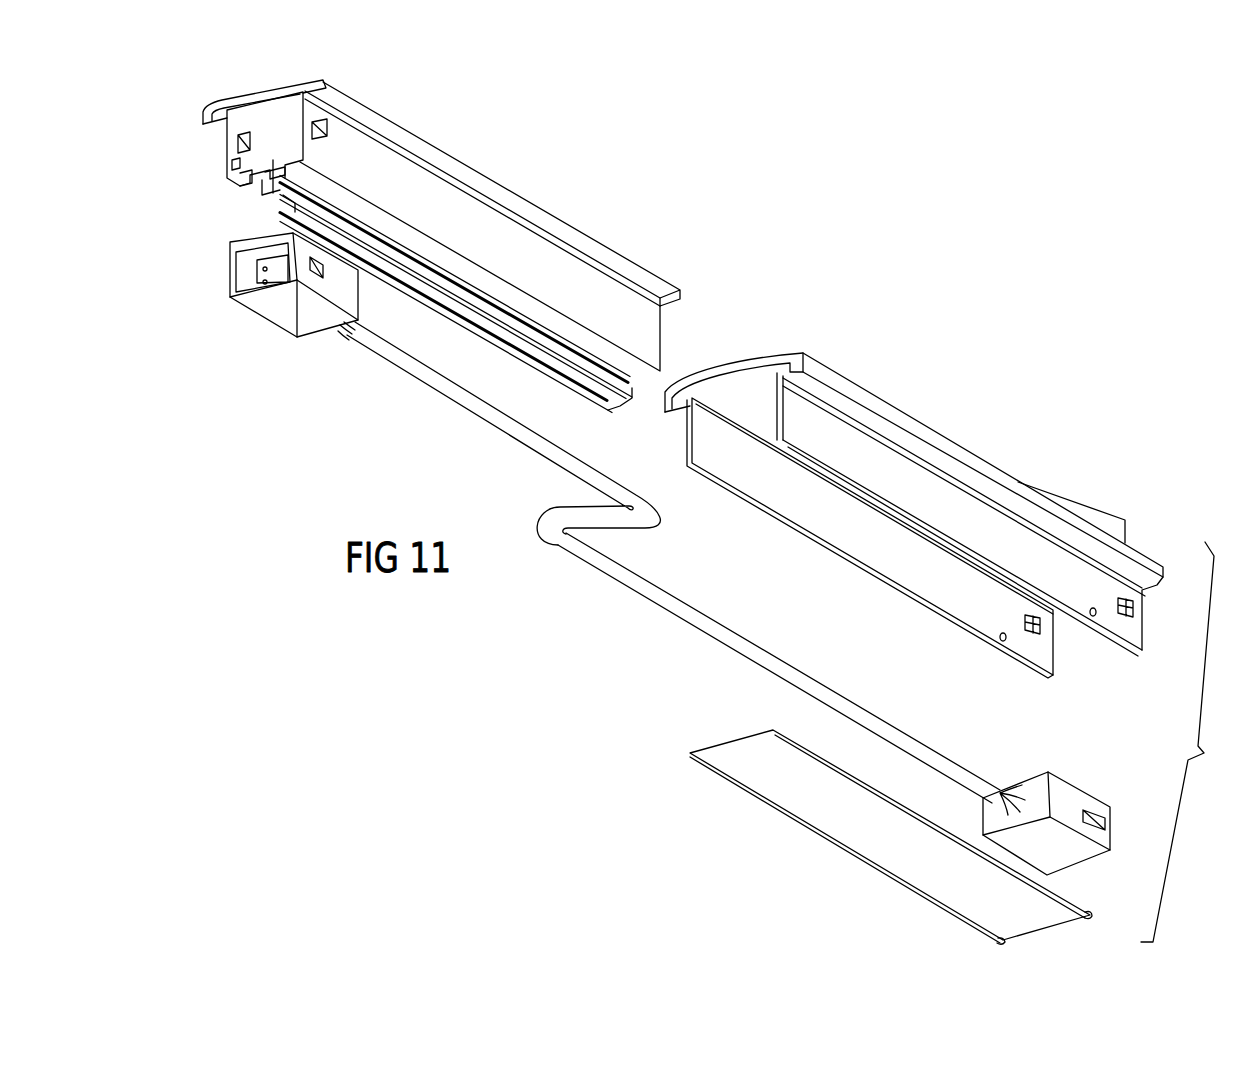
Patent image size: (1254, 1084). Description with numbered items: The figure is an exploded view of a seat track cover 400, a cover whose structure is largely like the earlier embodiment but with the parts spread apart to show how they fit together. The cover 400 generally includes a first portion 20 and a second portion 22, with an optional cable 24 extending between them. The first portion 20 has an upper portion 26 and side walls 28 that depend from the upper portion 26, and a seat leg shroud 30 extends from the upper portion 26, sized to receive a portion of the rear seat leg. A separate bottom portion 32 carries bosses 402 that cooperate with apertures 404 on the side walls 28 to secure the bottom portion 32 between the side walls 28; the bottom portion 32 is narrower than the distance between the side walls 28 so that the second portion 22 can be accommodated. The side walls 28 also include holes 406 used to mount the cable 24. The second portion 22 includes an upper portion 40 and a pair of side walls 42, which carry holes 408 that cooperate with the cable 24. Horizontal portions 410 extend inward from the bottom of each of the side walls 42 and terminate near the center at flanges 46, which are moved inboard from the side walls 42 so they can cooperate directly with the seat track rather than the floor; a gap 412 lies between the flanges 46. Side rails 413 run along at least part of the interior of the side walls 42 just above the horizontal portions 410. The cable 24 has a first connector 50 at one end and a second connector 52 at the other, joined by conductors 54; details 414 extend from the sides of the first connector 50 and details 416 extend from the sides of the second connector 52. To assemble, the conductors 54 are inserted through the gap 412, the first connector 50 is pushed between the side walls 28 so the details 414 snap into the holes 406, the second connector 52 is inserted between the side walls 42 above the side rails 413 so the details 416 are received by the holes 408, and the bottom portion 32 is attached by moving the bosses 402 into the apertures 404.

The first portion 20 is at (906, 403).
The second portion 22 is at (510, 187).
The cable 24 is at (707, 630).
The upper portion 26 is at (957, 440).
The side walls 28 is at (812, 423).
The seat leg shroud 30 is at (1107, 522).
The bottom portion 32 is at (820, 800).
The upper portion 40 is at (603, 247).
The side walls 42 is at (222, 136).
The flanges 46 is at (262, 192).
The first connector 50 is at (1062, 786).
The second connector 52 is at (298, 308).
The conductors 54 is at (599, 477).
The seat track cover 400 is at (1184, 742).
The bosses 402 is at (1092, 914).
The apertures 404 is at (1003, 640).
The holes 406 is at (1042, 628).
The holes 408 is at (320, 125).
The horizontal portions 410 is at (236, 183).
The gap 412 is at (285, 203).
The side rails 413 is at (293, 100).
The details 414 is at (1093, 812).
The details 416 is at (322, 272).